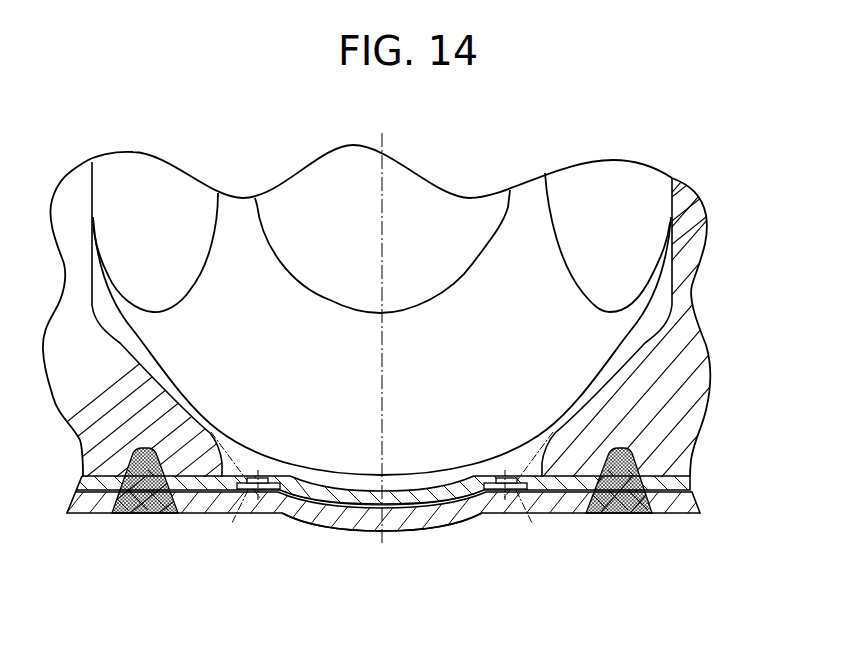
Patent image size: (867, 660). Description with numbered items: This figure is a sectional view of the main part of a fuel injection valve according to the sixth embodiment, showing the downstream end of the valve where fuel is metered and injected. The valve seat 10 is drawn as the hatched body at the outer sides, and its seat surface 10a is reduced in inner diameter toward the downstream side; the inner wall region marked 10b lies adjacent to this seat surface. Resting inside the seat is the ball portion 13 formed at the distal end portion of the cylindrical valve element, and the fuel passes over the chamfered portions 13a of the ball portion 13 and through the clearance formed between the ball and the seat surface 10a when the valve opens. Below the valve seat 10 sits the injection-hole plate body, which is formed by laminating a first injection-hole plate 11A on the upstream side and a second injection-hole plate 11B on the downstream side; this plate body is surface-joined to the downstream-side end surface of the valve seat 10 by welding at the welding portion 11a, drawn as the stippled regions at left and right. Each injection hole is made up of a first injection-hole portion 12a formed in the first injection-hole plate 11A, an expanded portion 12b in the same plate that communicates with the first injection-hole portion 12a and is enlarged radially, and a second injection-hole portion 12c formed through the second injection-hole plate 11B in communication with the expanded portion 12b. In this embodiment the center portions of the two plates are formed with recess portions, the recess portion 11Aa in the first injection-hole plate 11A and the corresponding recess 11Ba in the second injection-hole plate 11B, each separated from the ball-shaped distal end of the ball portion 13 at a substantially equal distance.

The valve seat 10 is at (693, 328).
The seat surface 10a is at (602, 367).
The tooth receiving surface 10b is at (560, 437).
The first injection-hole plate 11A is at (677, 487).
The recess portion 11Aa is at (437, 492).
The second injection-hole plate 11B is at (678, 505).
The bent portion of second substrate layer 11Ba is at (360, 531).
The welding portion 11a is at (142, 513).
The first injection-hole portion 12a is at (318, 514).
The expanded portion 12b is at (287, 492).
The second injection-hole portion 12c is at (220, 494).
The ball portion 13 is at (515, 232).
The chamfered portions 13a is at (637, 218).